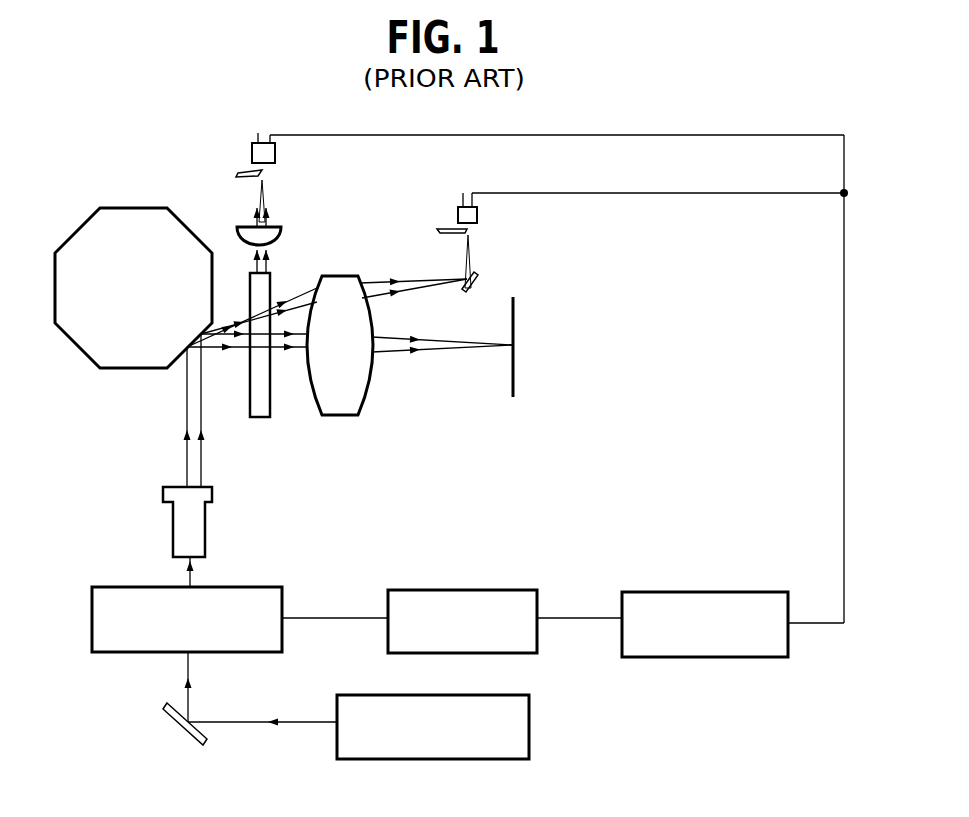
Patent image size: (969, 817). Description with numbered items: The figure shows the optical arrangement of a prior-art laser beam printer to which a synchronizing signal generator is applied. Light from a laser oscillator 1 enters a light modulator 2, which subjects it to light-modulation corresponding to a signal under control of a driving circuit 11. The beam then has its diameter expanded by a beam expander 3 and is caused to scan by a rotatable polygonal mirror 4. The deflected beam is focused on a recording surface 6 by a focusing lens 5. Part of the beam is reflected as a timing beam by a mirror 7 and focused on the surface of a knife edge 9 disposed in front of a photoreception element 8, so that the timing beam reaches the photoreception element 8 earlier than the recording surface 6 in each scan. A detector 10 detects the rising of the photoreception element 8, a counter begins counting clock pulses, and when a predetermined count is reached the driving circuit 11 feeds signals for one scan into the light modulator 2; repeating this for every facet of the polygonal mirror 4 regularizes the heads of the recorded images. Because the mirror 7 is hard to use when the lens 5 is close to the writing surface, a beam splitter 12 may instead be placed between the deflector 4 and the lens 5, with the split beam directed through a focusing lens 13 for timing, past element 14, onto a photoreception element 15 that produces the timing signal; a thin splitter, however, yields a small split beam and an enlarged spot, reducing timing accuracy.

The laser oscillator 1 is at (529, 712).
The light modulator 2 is at (133, 586).
The beam expander 3 is at (198, 525).
The rotatable polygonal mirror 4 is at (124, 369).
The focusing lens 5 is at (334, 416).
The recording surface 6 is at (514, 370).
The mirror 7 is at (480, 279).
The photoreception element 8 is at (478, 215).
The knife edge 9 is at (437, 230).
The detector 10 is at (697, 592).
The driving circuit 11 is at (452, 590).
The beam splitter 12 is at (260, 418).
The focusing lens for timing 13 is at (281, 236).
The mirror 14 is at (236, 173).
The photoreception element 15 is at (252, 156).